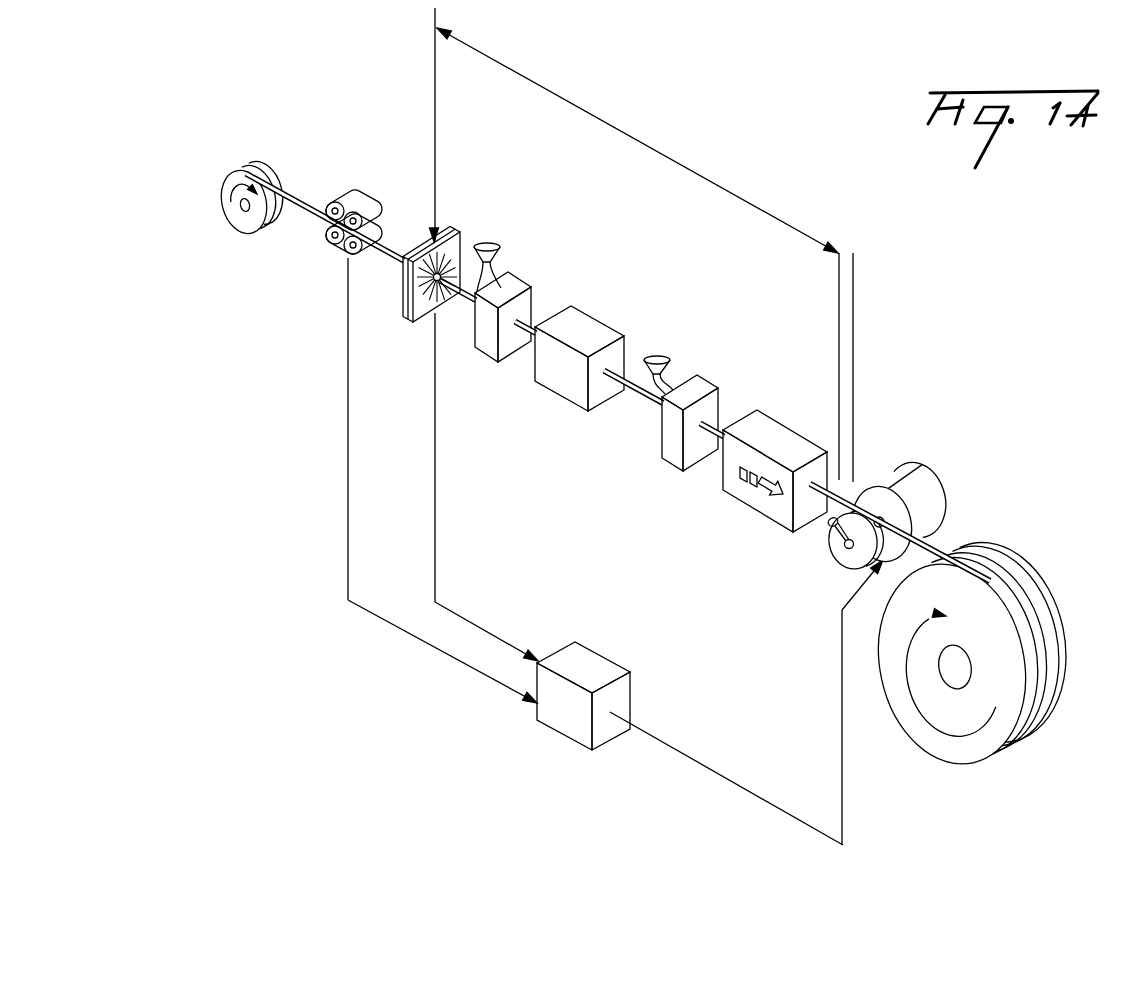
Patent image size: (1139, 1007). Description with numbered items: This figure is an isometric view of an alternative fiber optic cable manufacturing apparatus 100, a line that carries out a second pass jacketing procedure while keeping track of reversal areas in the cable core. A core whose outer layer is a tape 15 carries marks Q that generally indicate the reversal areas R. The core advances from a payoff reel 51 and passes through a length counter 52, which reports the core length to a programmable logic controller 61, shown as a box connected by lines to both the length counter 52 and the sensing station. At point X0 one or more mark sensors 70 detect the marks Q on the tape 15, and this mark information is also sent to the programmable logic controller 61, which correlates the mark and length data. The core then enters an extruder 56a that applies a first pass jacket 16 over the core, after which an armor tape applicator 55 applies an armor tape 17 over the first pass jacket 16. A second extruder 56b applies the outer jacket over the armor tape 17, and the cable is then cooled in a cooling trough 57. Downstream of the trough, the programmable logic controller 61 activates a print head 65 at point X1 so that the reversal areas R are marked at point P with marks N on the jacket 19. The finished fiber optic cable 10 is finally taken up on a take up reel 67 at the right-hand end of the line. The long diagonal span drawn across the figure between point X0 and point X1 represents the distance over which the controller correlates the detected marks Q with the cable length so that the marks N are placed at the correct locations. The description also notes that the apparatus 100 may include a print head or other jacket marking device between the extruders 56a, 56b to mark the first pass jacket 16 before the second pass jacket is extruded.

The fiber optic cable 10 is at (928, 547).
The tape 15 is at (275, 190).
The first pass jacket 16 is at (527, 328).
The armor tape 17 is at (633, 387).
The jacket 19 is at (708, 432).
The payoff reel 51 is at (230, 212).
The length counter 52 is at (347, 198).
The armor tape applicator 55 is at (557, 380).
The extruder 56a is at (510, 283).
The second extruder 56b is at (670, 445).
The cooling trough 57 is at (770, 503).
The programmable logic controller 61 is at (588, 670).
The print head 65 is at (840, 557).
The take up reel 67 is at (1010, 747).
The mark sensor 70 is at (417, 238).
The manufacturing apparatus 100 is at (617, 107).
The marks N is at (935, 555).
The point P is at (853, 250).
The marks Q is at (268, 178).
The reversal areas R is at (296, 198).
The point X0 is at (451, 15).
The point X1 is at (820, 226).